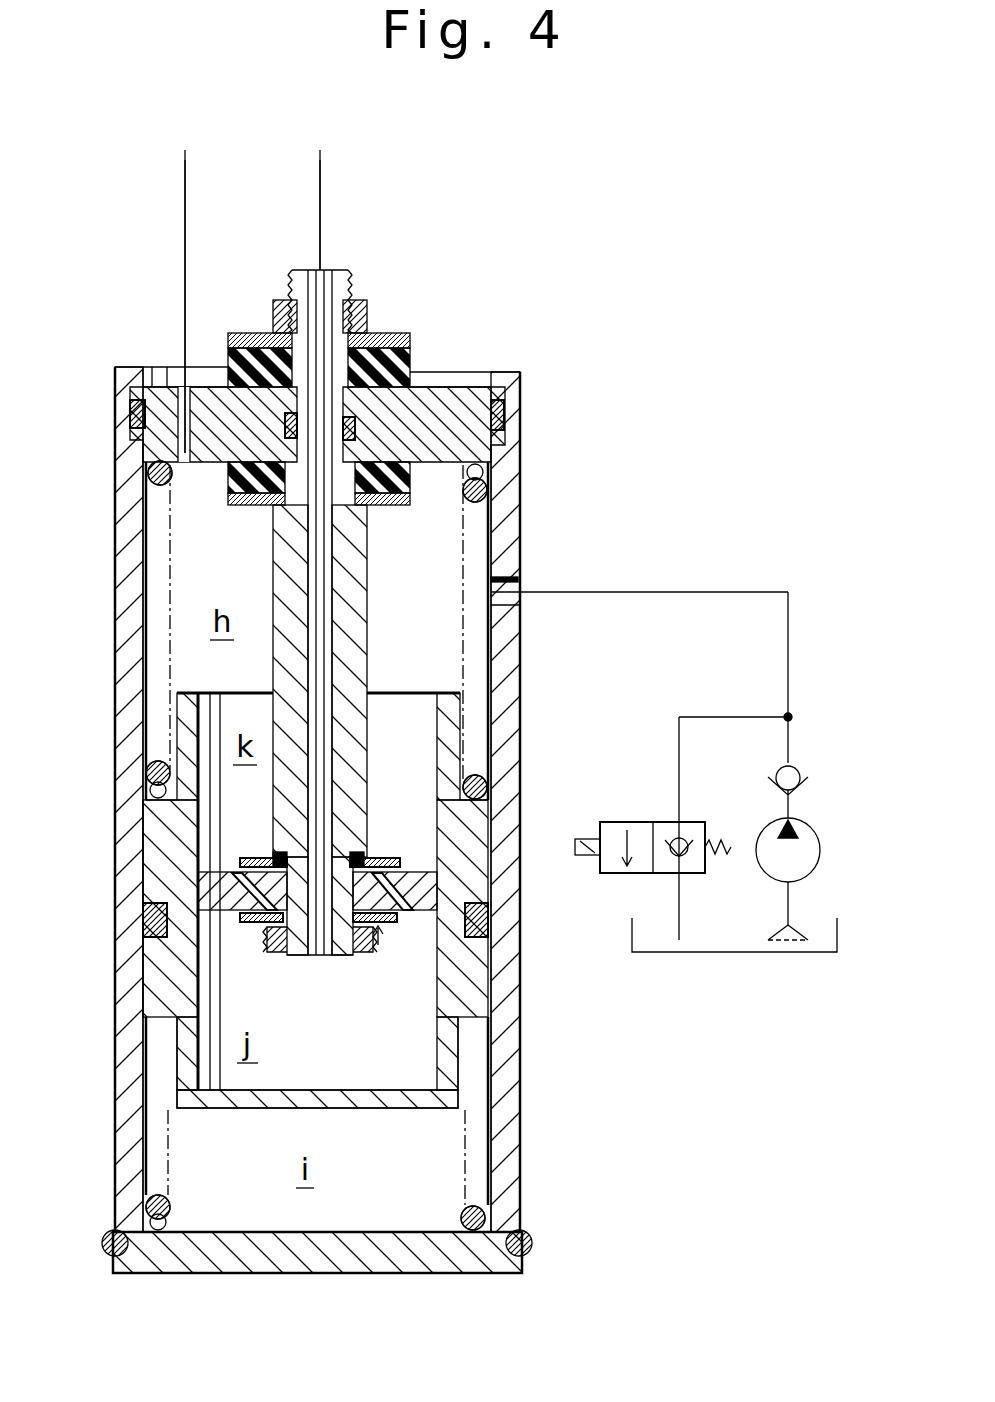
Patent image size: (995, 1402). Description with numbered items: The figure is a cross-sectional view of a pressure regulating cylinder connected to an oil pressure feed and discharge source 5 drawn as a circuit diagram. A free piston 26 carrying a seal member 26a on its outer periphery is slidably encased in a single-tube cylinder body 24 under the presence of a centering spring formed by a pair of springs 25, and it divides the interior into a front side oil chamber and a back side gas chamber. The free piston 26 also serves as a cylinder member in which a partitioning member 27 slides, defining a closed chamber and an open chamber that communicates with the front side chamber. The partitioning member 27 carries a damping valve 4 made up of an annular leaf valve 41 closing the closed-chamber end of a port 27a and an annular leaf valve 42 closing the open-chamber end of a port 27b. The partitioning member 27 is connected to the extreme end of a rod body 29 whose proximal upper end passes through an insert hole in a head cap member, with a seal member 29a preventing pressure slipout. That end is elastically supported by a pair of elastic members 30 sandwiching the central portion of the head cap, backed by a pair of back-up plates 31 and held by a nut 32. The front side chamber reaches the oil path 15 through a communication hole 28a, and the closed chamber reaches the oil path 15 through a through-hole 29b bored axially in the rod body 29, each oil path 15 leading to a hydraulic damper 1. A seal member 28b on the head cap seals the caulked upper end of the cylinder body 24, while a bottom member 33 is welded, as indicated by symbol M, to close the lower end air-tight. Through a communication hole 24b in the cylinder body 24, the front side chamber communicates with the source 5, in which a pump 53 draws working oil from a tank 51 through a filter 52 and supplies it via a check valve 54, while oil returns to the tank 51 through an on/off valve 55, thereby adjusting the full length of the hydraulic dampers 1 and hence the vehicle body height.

The hydraulic damper 1 is at (252, 282).
The oil path 15 is at (185, 218).
The nut 32 is at (363, 302).
The back-up plate 31 is at (395, 345).
The communication hole 28a is at (178, 395).
The elastic member 30 is at (410, 360).
The seal member 28b is at (130, 415).
The spring 25 is at (490, 488).
The seal member 29a is at (283, 425).
The communication hole 24b is at (521, 587).
The rod body 29 is at (350, 660).
The oil pressure feed and discharge source 5 is at (814, 752).
The on/off valve 55 is at (633, 822).
The check valve 54 is at (805, 785).
The cylinder body 24 is at (130, 797).
The partitioning member 27 is at (225, 870).
The annular leaf valve 42 is at (398, 858).
The pump 53 is at (822, 860).
The filter 52 is at (805, 925).
The seal member 26a is at (140, 920).
The port 27a is at (232, 914).
The port 27b is at (398, 935).
The damping valve 4 is at (378, 950).
The annular leaf valve 41 is at (255, 905).
The free piston 26 is at (165, 990).
The tank 51 is at (750, 952).
The through-hole 29b is at (320, 945).
The bottom member 33 is at (332, 1258).
The weld M is at (535, 1242).